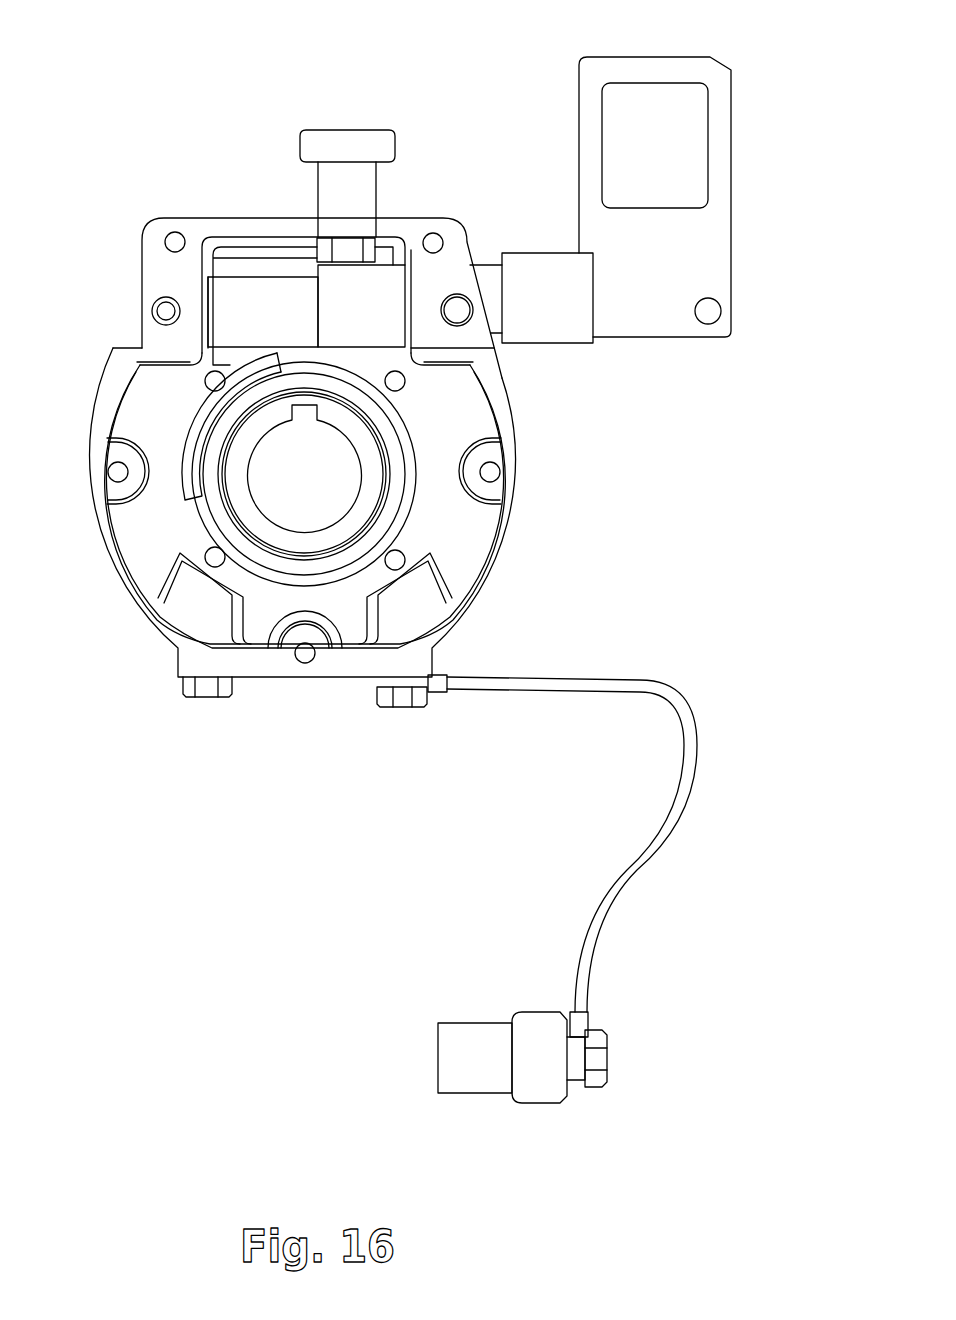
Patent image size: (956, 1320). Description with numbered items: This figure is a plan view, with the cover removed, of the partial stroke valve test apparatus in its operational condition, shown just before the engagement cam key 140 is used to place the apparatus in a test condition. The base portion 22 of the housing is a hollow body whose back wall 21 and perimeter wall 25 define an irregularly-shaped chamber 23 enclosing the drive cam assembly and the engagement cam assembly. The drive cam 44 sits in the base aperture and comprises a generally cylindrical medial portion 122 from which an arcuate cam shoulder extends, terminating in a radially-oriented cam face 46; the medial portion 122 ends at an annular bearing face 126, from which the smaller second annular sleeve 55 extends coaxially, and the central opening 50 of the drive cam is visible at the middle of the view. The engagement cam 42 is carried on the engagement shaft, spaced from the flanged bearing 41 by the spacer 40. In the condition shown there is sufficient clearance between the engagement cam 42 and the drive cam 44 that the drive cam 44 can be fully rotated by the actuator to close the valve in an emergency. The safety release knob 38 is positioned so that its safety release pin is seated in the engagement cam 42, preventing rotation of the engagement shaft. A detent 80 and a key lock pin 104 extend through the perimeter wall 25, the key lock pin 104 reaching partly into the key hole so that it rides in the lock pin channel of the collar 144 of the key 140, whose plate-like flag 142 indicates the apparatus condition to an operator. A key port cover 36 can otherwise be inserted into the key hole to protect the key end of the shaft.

The back wall 21 is at (148, 538).
The base portion 22 is at (270, 218).
The chamber 23 is at (438, 434).
The perimeter wall 25 is at (400, 258).
The key port cover 36 is at (543, 1018).
The safety release knob 38 is at (344, 130).
The spacer 40 is at (256, 294).
The flanged bearing 41 is at (204, 275).
The engagement cam 42 is at (373, 286).
The drive cam 44 is at (195, 467).
The cam face 46 is at (288, 383).
The shaft bore 50 is at (295, 490).
The second annular sleeve 55 is at (270, 520).
The detent 80 is at (160, 305).
The key lock pin 104 is at (457, 305).
The medial portion 122 is at (405, 483).
The annular bearing face 126 is at (385, 503).
The engagement cam key 140 is at (661, 212).
The flag 142 is at (663, 297).
The collar 144 is at (492, 292).